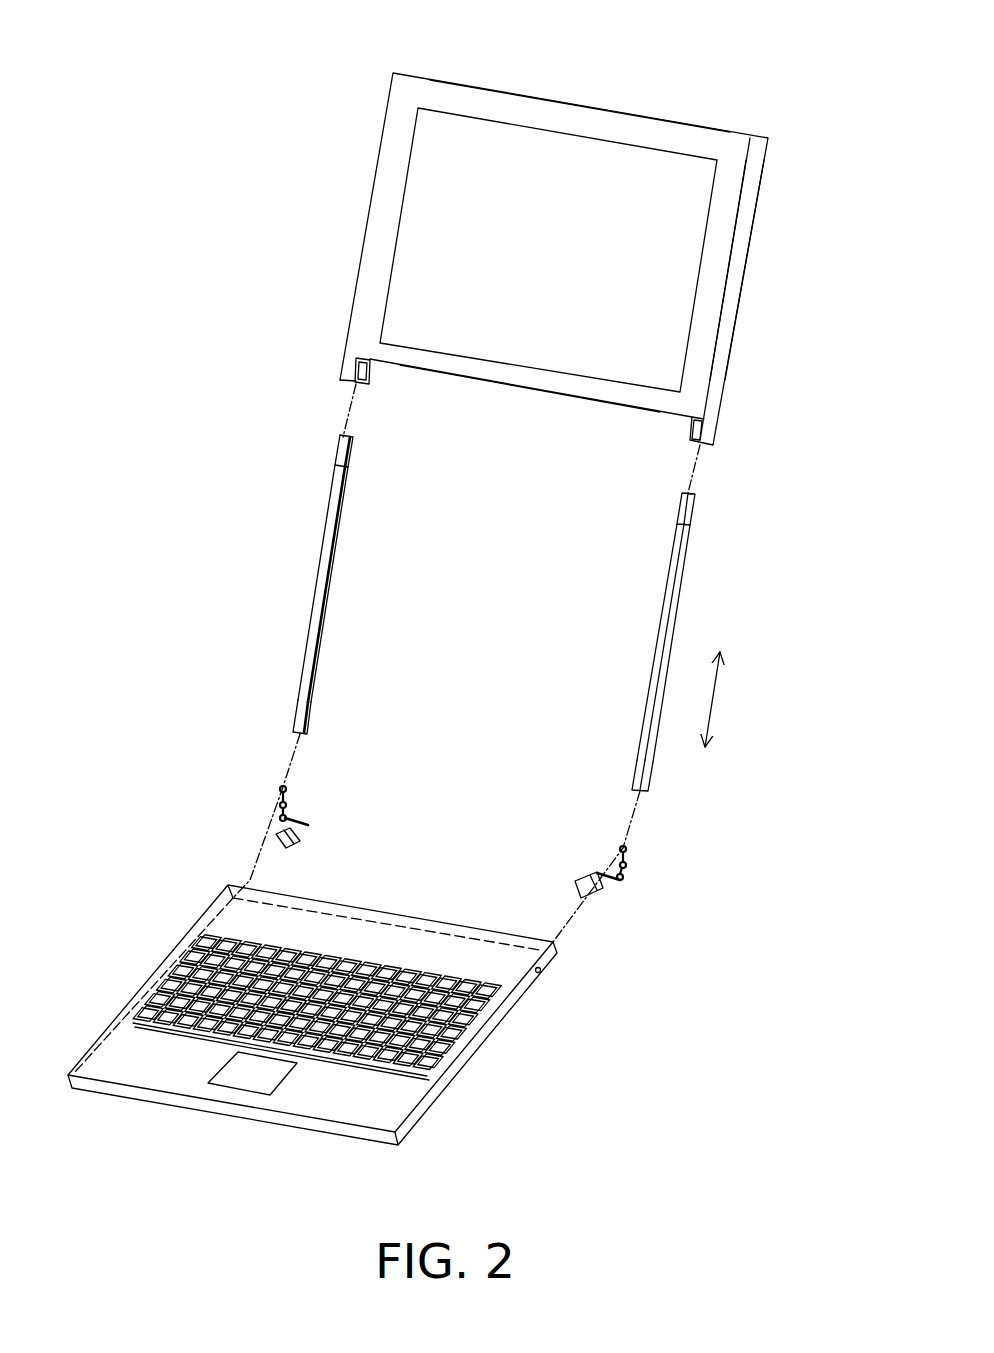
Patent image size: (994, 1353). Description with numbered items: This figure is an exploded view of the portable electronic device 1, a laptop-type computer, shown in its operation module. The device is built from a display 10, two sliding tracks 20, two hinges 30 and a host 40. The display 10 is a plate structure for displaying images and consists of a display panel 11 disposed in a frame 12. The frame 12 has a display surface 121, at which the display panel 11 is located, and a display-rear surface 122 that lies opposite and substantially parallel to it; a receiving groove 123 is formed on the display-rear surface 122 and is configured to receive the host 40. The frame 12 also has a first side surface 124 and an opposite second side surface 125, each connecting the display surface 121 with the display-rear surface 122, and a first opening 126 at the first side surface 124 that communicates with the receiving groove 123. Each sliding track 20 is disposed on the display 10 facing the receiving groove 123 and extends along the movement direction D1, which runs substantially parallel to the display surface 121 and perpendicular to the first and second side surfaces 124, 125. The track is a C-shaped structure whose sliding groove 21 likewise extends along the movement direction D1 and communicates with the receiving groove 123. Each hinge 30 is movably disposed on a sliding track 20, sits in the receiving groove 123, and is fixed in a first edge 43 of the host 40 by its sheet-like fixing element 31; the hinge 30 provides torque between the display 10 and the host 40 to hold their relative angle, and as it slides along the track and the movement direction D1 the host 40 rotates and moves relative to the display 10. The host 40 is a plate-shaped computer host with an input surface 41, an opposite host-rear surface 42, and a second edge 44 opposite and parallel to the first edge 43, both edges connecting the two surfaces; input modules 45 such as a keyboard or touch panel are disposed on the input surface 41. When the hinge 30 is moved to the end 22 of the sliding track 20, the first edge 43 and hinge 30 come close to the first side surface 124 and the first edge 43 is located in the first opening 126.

The portable electronic device 1 is at (97, 45).
The display 10 is at (787, 63).
The display panel 11 is at (629, 180).
The frame 12 is at (728, 192).
The display surface 121 is at (711, 330).
The display-rear surface 122 is at (743, 295).
The receiving groove 123 is at (520, 398).
The first side surface 124 is at (690, 438).
The second side surface 125 is at (572, 105).
The first opening 126 is at (367, 370).
The sliding track 20 is at (297, 591).
The sliding groove 21 is at (293, 725).
The end of the sliding track 22 is at (342, 436).
The hinge 30 is at (317, 805).
The fixing element 31 is at (272, 832).
The host 40 is at (124, 950).
The input surface 41 is at (125, 1063).
The host-rear surface 42 is at (343, 1092).
The first edge 43 is at (371, 920).
The second edge 44 is at (302, 1122).
The input module 45 is at (247, 1075).
The movement direction D1 is at (731, 699).